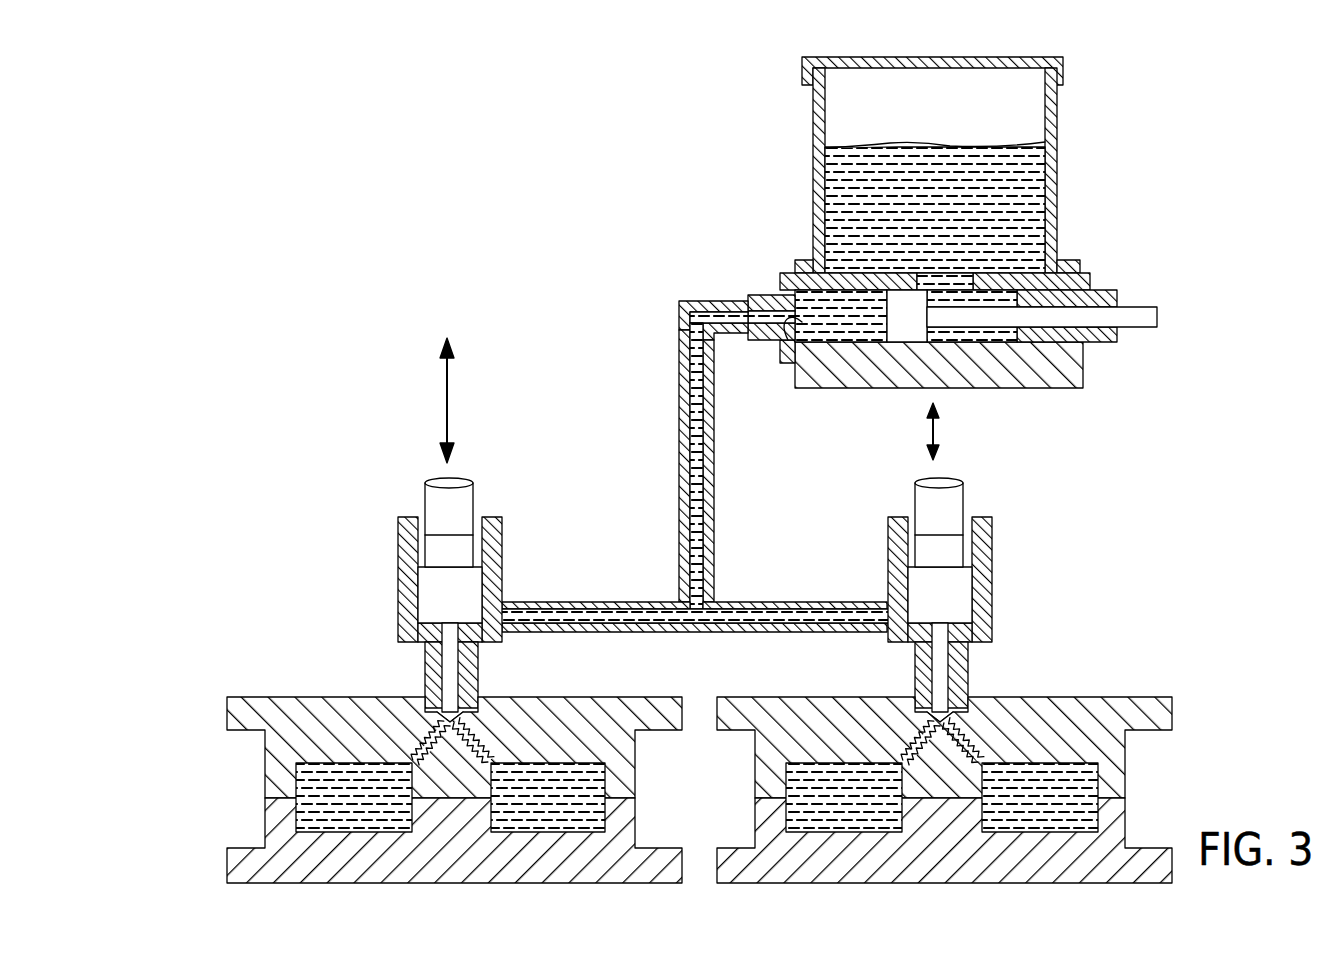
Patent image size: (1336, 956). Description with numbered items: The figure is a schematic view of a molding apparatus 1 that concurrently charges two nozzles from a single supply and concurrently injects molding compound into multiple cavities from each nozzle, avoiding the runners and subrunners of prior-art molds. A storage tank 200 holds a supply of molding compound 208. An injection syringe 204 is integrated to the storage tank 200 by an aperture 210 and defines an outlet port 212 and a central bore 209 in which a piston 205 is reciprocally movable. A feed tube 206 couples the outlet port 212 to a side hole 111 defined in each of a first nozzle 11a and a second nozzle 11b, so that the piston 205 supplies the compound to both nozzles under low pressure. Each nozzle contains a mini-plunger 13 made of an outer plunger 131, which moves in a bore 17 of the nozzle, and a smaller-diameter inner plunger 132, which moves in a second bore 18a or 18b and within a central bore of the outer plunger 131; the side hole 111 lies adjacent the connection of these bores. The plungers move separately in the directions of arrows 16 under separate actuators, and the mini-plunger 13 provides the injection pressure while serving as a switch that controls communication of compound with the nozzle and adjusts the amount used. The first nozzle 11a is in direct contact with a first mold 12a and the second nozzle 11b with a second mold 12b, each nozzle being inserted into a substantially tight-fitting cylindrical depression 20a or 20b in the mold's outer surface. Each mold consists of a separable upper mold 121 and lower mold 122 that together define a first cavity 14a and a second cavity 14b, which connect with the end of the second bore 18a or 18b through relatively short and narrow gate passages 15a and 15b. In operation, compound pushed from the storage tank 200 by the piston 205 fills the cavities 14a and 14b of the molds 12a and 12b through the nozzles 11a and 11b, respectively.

The molding apparatus 1 is at (506, 282).
The molding compound storage tank 200 is at (800, 164).
The injection syringe 204 is at (1077, 390).
The piston 205 is at (893, 332).
The feed tube 206 is at (679, 432).
The molding compound 208 is at (1052, 207).
The central bore 209 is at (786, 334).
The aperture 210 is at (917, 285).
The outlet port 212 is at (772, 325).
The first nozzle 11a is at (503, 567).
The second nozzle 11b is at (887, 548).
The side hole 111 is at (492, 607).
The first mold 12a is at (247, 795).
The second mold 12b is at (1168, 770).
The upper mold 121 is at (232, 697).
The lower mold 122 is at (245, 850).
The mini-plunger 13 is at (455, 480).
The outer plunger 131 is at (430, 590).
The inner plunger 132 is at (430, 682).
The first cavity 14a is at (337, 770).
The second cavity 14b is at (560, 777).
The first gate passage 15a is at (417, 753).
The second gate passage 15b is at (477, 733).
The arrows 16 is at (447, 405).
The bore 17 is at (420, 535).
The second bore 18a is at (415, 625).
The second bore 18b is at (965, 657).
The cylindrical depression 20a is at (460, 680).
The cylindrical depression 20b is at (948, 675).